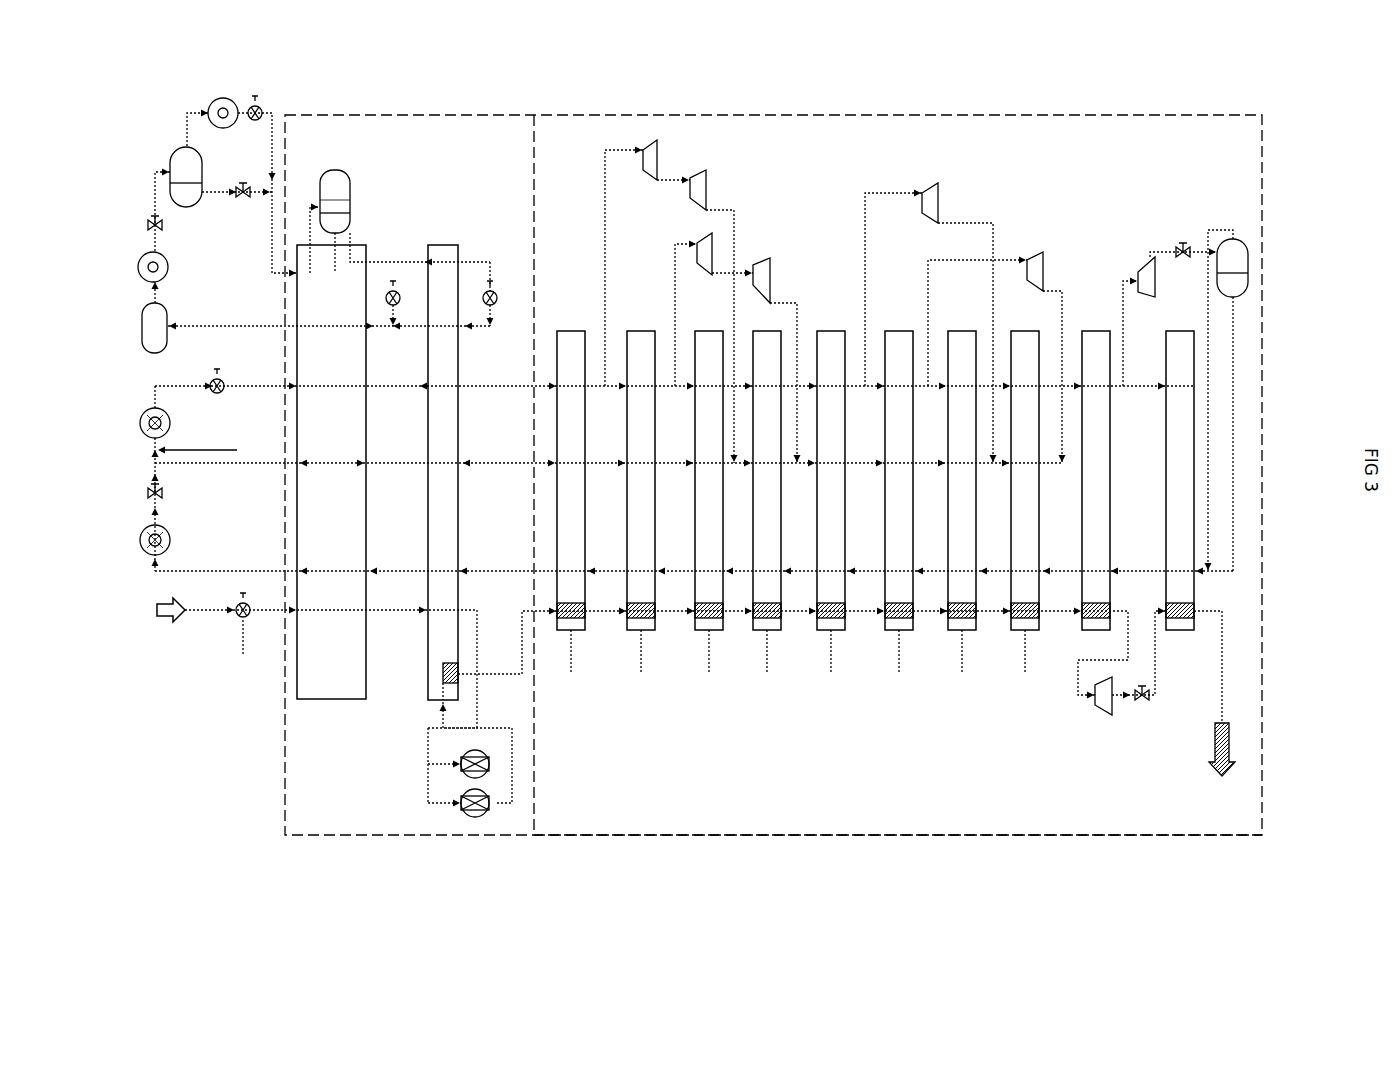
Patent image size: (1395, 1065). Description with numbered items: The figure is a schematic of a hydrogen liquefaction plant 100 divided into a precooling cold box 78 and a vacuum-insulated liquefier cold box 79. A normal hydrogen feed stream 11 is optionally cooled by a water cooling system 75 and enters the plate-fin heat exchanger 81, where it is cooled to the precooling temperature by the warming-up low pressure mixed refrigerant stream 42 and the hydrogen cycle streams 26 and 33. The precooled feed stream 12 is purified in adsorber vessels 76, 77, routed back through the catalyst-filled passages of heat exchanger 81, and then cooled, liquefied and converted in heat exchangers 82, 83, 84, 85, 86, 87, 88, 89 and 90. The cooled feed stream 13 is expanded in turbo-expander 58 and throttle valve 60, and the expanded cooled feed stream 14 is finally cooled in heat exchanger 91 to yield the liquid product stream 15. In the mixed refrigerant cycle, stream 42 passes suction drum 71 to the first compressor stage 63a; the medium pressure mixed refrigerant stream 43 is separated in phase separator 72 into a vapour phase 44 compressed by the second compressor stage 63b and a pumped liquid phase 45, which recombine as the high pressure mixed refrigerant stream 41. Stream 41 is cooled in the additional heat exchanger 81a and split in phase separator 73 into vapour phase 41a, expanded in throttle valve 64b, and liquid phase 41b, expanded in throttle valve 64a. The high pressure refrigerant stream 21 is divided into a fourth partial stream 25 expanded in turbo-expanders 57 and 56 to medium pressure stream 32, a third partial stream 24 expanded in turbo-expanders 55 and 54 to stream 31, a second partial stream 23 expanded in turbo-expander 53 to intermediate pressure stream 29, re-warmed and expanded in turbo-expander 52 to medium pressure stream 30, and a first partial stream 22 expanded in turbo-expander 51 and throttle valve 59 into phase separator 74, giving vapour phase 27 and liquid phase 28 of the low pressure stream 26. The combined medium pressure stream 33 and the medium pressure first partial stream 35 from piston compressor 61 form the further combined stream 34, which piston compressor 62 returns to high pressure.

The liquefaction plant 100 is at (283, 793).
The precooling cold box 78 is at (466, 840).
The liquefier cold box 79 is at (578, 840).
The additional heat exchanger 81a is at (312, 700).
The plate-fin heat exchanger 81 is at (438, 700).
The high pressure refrigerant stream 21 is at (674, 380).
The combined medium pressure stream 33 is at (608, 451).
The low pressure first partial stream 26 is at (695, 560).
The low pressure mixed refrigerant stream 42 is at (328, 316).
The piston compressor 62 is at (160, 421).
The piston compressor 61 is at (160, 536).
The medium pressure first partial stream 35 is at (158, 478).
The further combined medium pressure stream 34 is at (212, 450).
The feed stream 11 is at (334, 702).
The water cooling 75 is at (240, 639).
The adsorber vessel 76 is at (489, 762).
The adsorber vessel 77 is at (489, 802).
The precooled feed stream 12 is at (507, 641).
The second compressor stage 63b is at (218, 98).
The vapour phase of medium pressure mixed refrigerant stream 44 is at (182, 129).
The phase separator 72 is at (184, 203).
The medium pressure mixed refrigerant stream 43 is at (150, 211).
The first compressor stage 63a is at (160, 269).
The suction drum 71 is at (150, 330).
The liquid phase of medium pressure mixed refrigerant stream 45 is at (237, 181).
The high pressure mixed refrigerant stream 41 is at (267, 186).
The vapour phase of high pressure mixed refrigerant stream 41a is at (334, 170).
The phase separator 73 is at (337, 190).
The liquid phase of high pressure mixed refrigerant stream 41b is at (335, 276).
The throttle valve 64a is at (394, 288).
The throttle valve 64b is at (490, 288).
The heat exchanger 82 is at (571, 514).
The heat exchanger 83 is at (641, 514).
The heat exchanger 84 is at (709, 514).
The heat exchanger 85 is at (768, 514).
The heat exchanger 86 is at (833, 514).
The heat exchanger 87 is at (899, 514).
The heat exchanger 88 is at (963, 514).
The heat exchanger 89 is at (1027, 514).
The heat exchanger 90 is at (1094, 468).
The heat exchanger 91 is at (1178, 420).
The cooled feed stream 13 is at (842, 653).
The turbo-expander 58 is at (1104, 697).
The expanded cooled feed stream 14 is at (1149, 653).
The throttle valve 60 is at (1143, 703).
The liquid product stream 15 is at (1215, 693).
The high pressure fourth partial stream 25 is at (607, 267).
The turbo-expander 57 is at (648, 150).
The turbo-expander 56 is at (698, 192).
The medium pressure fourth partial stream 32 is at (732, 336).
The high pressure third partial stream 24 is at (671, 314).
The turbo-expander 55 is at (705, 250).
The turbo-expander 54 is at (765, 280).
The medium pressure third partial stream 31 is at (793, 383).
The high pressure second partial stream 23 is at (878, 288).
The turbo-expander 53 is at (927, 203).
The intermediate pressure second partial stream 29 is at (967, 333).
The turbo-expander 52 is at (1033, 270).
The medium pressure second partial stream 30 is at (1066, 375).
The high pressure first partial stream 22 is at (1139, 332).
The turbo-expander 51 is at (1150, 272).
The throttle valve 59 is at (1183, 246).
The phase separator 74 is at (1237, 250).
The vapour phase of low pressure first partial stream 27 is at (1206, 400).
The liquid phase of low pressure first partial stream 28 is at (1245, 434).